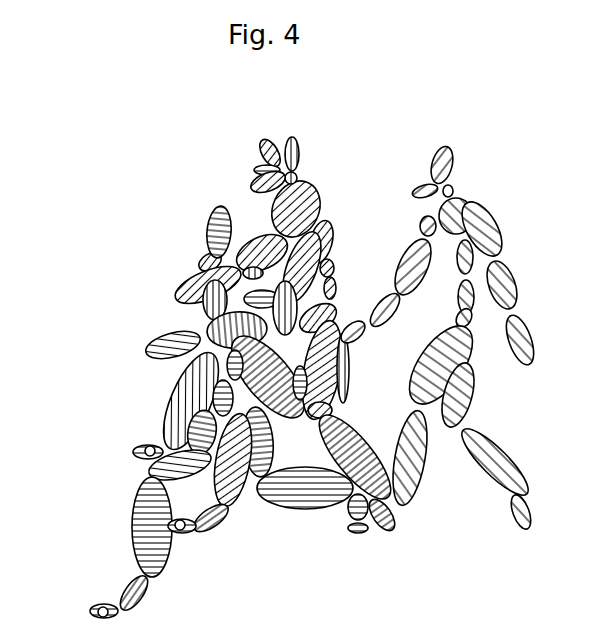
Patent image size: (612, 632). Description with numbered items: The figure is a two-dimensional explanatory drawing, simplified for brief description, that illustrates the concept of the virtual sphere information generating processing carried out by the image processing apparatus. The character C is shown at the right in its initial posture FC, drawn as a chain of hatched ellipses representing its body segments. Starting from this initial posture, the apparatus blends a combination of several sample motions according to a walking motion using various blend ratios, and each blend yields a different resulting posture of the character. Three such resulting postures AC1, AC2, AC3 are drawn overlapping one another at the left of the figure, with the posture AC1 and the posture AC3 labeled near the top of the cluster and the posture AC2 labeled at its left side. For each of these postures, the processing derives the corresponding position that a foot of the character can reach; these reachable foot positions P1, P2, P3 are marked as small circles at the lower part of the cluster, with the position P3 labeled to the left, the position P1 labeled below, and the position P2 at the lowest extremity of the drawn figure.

The posture of the character AC1 is at (263, 142).
The posture of the character AC2 is at (210, 214).
The posture of the character AC3 is at (302, 155).
The reachable position of a foot P1 is at (185, 528).
The reachable position of a foot P2 is at (98, 609).
The reachable position of a foot P3 is at (140, 448).